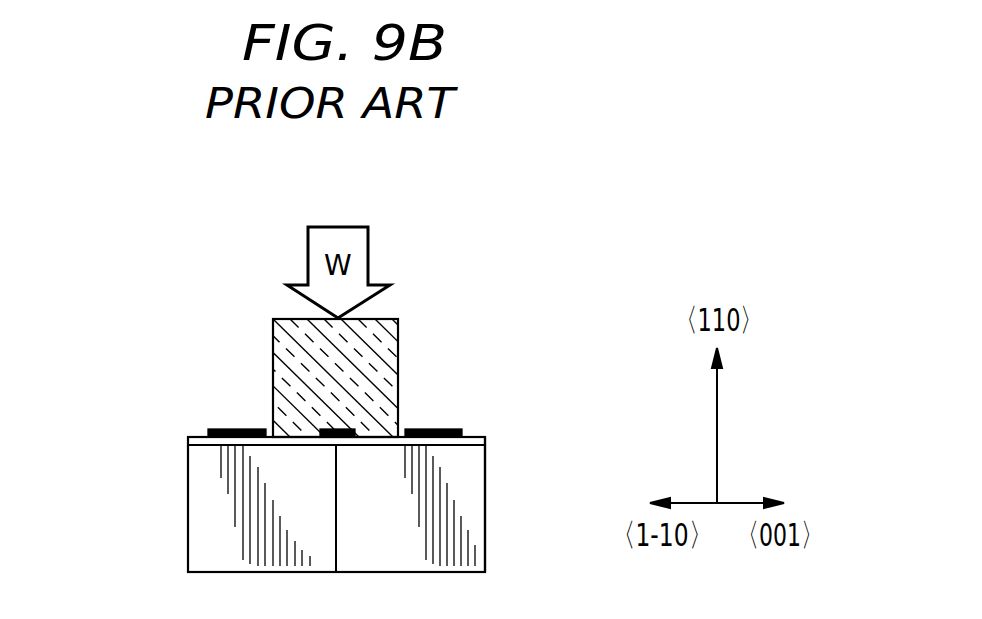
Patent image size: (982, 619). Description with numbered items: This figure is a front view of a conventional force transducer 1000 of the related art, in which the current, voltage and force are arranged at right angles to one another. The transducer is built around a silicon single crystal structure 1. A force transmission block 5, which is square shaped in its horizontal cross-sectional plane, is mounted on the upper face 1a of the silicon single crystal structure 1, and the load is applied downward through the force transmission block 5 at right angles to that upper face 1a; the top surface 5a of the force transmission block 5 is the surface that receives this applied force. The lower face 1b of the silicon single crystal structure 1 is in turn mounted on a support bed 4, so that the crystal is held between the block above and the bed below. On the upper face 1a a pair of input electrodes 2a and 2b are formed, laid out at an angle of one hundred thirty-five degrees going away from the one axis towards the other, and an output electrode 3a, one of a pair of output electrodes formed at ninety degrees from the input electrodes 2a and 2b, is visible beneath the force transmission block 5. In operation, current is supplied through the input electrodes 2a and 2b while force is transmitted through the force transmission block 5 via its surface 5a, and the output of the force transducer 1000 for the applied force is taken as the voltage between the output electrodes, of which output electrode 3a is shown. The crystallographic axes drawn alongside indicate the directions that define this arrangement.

The force transducer 1000 is at (175, 440).
The silicon single crystal structure 1 is at (487, 440).
The upper (110) face 1a is at (475, 436).
The lower (110) face 1b is at (468, 448).
The input electrode 2a is at (455, 428).
The input electrode 2b is at (240, 428).
The output electrode 3a is at (342, 438).
The support bed 4 is at (468, 545).
The force transmission block 5 is at (376, 372).
The chip surface 5a is at (384, 318).